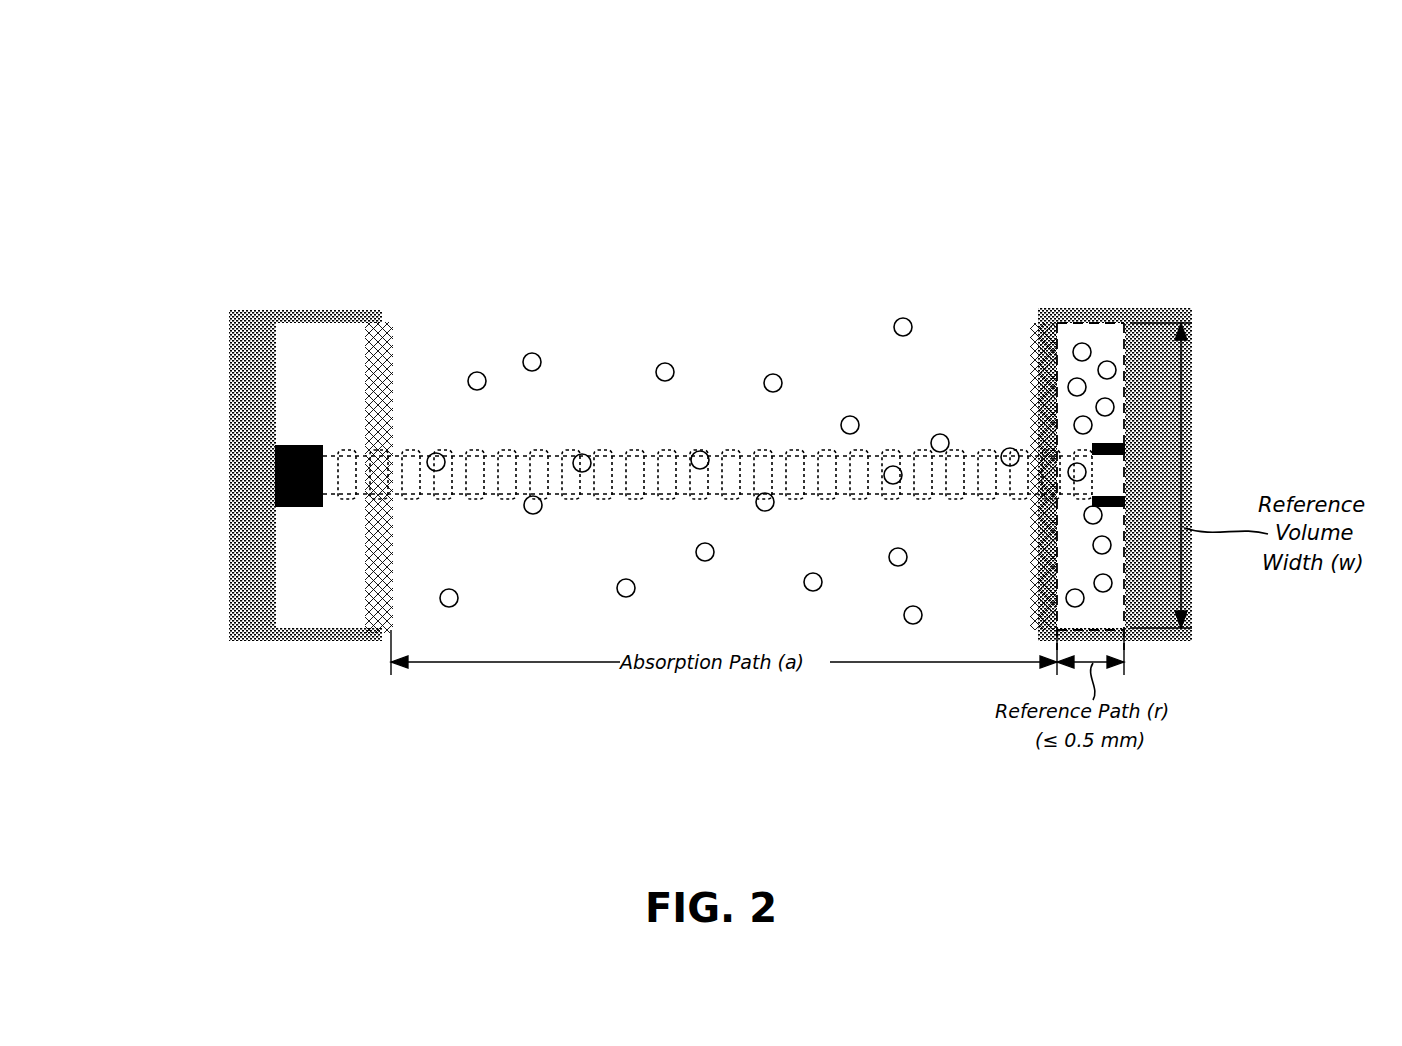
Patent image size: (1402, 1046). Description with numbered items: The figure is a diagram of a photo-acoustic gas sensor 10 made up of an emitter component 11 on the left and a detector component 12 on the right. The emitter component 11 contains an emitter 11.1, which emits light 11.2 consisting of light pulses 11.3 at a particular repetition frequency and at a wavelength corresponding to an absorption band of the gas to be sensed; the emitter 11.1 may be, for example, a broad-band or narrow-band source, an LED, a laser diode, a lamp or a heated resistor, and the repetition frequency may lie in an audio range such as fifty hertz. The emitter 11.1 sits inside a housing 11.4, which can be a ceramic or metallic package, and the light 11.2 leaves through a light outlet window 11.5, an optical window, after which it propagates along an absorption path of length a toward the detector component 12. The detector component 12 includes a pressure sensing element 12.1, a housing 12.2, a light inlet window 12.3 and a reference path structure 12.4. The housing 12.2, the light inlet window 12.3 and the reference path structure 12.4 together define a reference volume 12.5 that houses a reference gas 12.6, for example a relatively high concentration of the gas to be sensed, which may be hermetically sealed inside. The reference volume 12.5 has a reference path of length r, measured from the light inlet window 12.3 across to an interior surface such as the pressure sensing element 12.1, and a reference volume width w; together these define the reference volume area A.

The photo-acoustic gas sensor 10 is at (203, 31).
The emitter component 11 is at (206, 302).
The emitter 11.1 is at (300, 445).
The light 11.2 is at (497, 472).
The light pulses 11.3 is at (572, 496).
The housing 11.4 is at (243, 553).
The light outlet window 11.5 is at (380, 550).
The detector component 12 is at (1216, 302).
The pressure sensing element 12.1 is at (1105, 474).
The housing 12.2 is at (1160, 587).
The light inlet window 12.3 is at (1045, 555).
The reference path structure 12.4 is at (1137, 420).
The reference volume 12.5 is at (1108, 368).
The reference gas 12.6 is at (1082, 352).